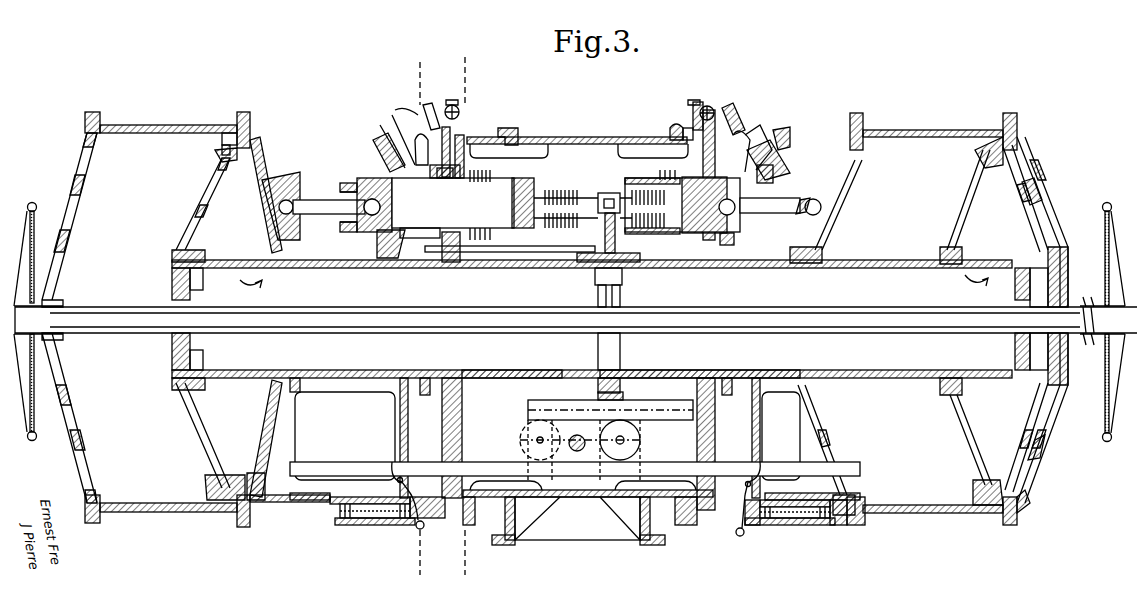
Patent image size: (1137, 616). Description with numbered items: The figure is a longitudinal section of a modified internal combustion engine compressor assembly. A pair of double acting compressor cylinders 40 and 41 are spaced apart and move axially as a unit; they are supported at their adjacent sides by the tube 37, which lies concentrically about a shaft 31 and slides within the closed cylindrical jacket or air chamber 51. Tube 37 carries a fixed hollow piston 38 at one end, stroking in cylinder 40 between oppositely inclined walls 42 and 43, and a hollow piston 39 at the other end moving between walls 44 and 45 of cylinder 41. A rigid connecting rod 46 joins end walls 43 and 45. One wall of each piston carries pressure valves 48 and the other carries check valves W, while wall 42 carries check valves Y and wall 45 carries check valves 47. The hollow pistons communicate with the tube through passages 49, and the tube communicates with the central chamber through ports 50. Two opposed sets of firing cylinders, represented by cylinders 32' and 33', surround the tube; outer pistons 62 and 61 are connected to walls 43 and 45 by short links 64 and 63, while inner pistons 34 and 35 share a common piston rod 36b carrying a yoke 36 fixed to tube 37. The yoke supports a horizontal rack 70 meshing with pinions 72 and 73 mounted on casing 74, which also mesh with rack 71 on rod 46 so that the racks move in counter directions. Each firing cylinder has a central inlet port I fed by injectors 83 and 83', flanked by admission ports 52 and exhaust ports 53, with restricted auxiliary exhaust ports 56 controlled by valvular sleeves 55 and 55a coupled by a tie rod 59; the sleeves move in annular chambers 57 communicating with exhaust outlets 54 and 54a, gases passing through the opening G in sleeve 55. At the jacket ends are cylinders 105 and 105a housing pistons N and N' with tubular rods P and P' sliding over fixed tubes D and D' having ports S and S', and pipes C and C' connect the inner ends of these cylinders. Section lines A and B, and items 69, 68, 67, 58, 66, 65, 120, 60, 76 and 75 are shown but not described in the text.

The shaft 31 is at (93, 307).
The shaft sleeve 69 is at (135, 312).
The left handle 68 is at (32, 203).
The right handle 67 is at (1107, 203).
The inclined wall 42 is at (60, 443).
The pressure valves 48 is at (198, 203).
The check valves 47 is at (865, 135).
The passages 49 is at (215, 268).
The ports 50 is at (680, 370).
The tube 37 is at (485, 380).
The compressor cylinder 40 is at (140, 512).
The compressor cylinder 41 is at (910, 513).
The hollow piston 38 is at (225, 495).
The hollow piston 39 is at (978, 505).
The end wall 43 is at (283, 180).
The inclined wall 44 is at (1035, 185).
The end wall 45 is at (850, 140).
The check valves Y is at (60, 225).
The check valves W is at (258, 160).
The link 64 is at (300, 200).
The piston 62 is at (355, 180).
The link 63 is at (800, 200).
The exhaust ports 53 is at (420, 225).
The admission ports 52 is at (523, 178).
The disk 58 is at (380, 165).
The annular chambers 57 is at (378, 243).
The exhaust outlet 54 is at (405, 140).
The exhaust outlet 54a is at (752, 130).
The valvular sleeve 55 is at (435, 103).
The valvular sleeve 55a is at (762, 140).
The auxiliary exhaust ports 56 is at (440, 170).
The opening G is at (418, 140).
The inlet port I is at (675, 130).
The section line A is at (419, 319).
The section line B is at (463, 317).
The screw 66 is at (452, 100).
The screw 65 is at (716, 105).
The injector 83 is at (486, 134).
The injector 83' is at (685, 103).
The piston 61 is at (735, 110).
The engine cylinder 32' is at (493, 179).
The engine cylinder 33' is at (666, 149).
The piston 34 is at (555, 145).
The yoke 36 is at (600, 195).
The piston rod 36b is at (600, 228).
The tie rod 59 is at (555, 277).
The pin 120 is at (450, 250).
The piston 35 is at (685, 240).
The housing post 60 is at (425, 395).
The connecting rod 46 is at (728, 468).
The pipe C is at (388, 465).
The pipe C' is at (768, 469).
The tubular piston rod P is at (310, 489).
The piston N is at (368, 488).
The port S is at (375, 495).
The port S' is at (795, 492).
The piston N' is at (795, 531).
The fixed tube D is at (418, 519).
The fixed tube D' is at (790, 537).
The tubular piston rod P' is at (838, 528).
The cylinder 105 is at (355, 525).
The cylinder 105a is at (845, 525).
The guide 76 is at (375, 518).
The post 75 is at (752, 525).
The cylindrical jacket 51 is at (492, 500).
The rack 71 is at (580, 497).
The casing 74 is at (625, 497).
The rack 70 is at (572, 412).
The pinion 72 is at (525, 438).
The pinion 73 is at (642, 442).